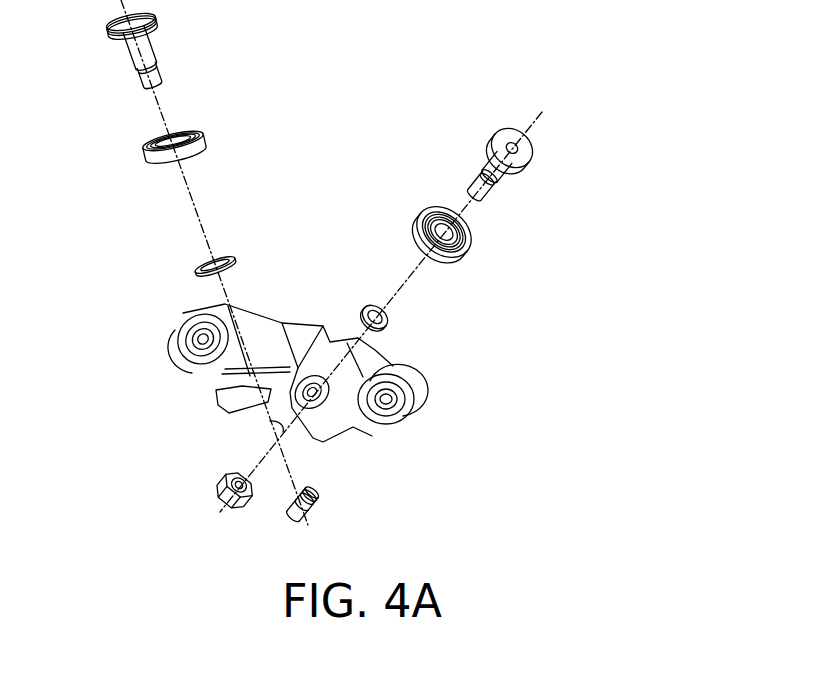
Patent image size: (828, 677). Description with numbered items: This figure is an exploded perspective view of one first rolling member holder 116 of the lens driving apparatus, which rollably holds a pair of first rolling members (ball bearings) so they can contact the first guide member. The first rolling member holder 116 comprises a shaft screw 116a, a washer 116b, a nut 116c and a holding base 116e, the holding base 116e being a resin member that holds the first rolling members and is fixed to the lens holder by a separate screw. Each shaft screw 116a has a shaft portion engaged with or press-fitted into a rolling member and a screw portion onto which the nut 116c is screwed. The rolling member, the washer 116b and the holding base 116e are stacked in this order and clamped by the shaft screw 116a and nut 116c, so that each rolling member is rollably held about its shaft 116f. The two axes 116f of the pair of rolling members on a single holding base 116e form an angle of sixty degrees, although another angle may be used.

The first rolling member holder 116 is at (380, 262).
The shaft screw 116a is at (157, 67).
The washer 116b is at (223, 267).
The nut 116c is at (252, 480).
The holding base 116e is at (418, 418).
The shaft 116f is at (167, 118).